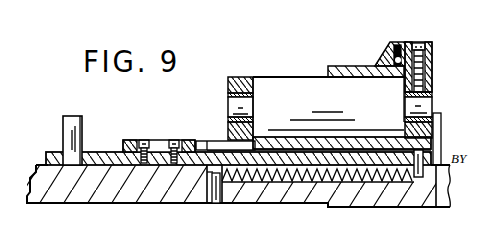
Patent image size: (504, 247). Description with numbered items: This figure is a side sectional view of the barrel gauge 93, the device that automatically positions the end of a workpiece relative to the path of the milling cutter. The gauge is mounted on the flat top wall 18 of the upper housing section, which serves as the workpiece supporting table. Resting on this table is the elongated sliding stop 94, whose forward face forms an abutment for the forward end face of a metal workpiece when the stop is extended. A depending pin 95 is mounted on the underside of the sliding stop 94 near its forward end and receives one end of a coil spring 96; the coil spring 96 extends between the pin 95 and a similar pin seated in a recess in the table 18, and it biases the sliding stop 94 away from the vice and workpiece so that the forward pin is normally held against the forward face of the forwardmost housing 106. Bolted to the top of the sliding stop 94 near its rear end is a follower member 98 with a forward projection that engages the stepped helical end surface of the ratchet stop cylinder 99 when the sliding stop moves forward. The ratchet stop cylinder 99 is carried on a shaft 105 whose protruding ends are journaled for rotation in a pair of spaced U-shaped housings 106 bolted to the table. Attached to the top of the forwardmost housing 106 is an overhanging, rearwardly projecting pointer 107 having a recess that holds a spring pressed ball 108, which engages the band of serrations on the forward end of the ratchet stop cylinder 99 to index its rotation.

The flat top wall 18 is at (43, 167).
The barrel gauge 93 is at (257, 40).
The sliding stop 94 is at (93, 151).
The depending pin 95 is at (424, 174).
The coil spring 96 is at (226, 150).
The follower member 98 is at (155, 140).
The ratchet stop cylinder 99 is at (348, 69).
The shaft 105 is at (298, 88).
The U-shaped housing 106 is at (247, 78).
The pointer 107 is at (429, 52).
The spring pressed ball 108 is at (399, 52).